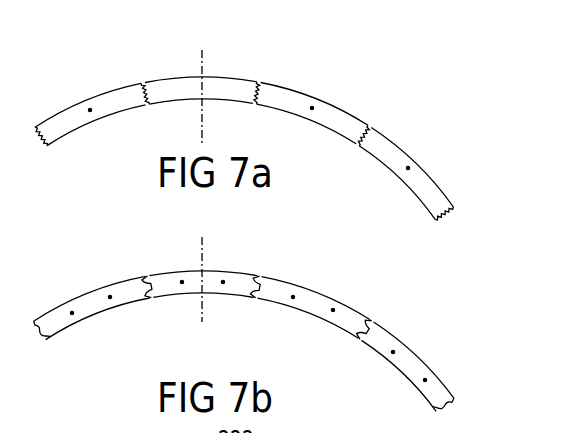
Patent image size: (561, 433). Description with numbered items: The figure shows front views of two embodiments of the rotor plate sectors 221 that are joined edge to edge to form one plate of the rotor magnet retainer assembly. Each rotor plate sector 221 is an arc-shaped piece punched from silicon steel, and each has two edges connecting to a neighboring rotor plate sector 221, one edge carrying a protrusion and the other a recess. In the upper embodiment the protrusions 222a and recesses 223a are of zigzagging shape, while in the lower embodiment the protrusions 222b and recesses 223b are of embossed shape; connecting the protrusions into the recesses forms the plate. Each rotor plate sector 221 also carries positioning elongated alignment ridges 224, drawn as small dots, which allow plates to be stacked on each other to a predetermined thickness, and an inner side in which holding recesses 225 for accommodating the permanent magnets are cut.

In FIG. 7A, the rotor plate sector 221 is at (263, 119).
In FIG. 7B, the rotor plate sector 221 is at (265, 305).
In FIG. 7A, the protrusion of zigzagging shape 222a is at (140, 92).
In FIG. 7B, the protrusion of embossed shape 222b is at (257, 288).
In FIG. 7A, the recess of zigzagging shape 223a is at (363, 132).
In FIG. 7B, the recess of embossed shape 223b is at (370, 328).
In FIG. 7A, the positioning elongated alignment ridge 224 is at (312, 107).
In FIG. 7A, the holding recess 225 is at (303, 119).